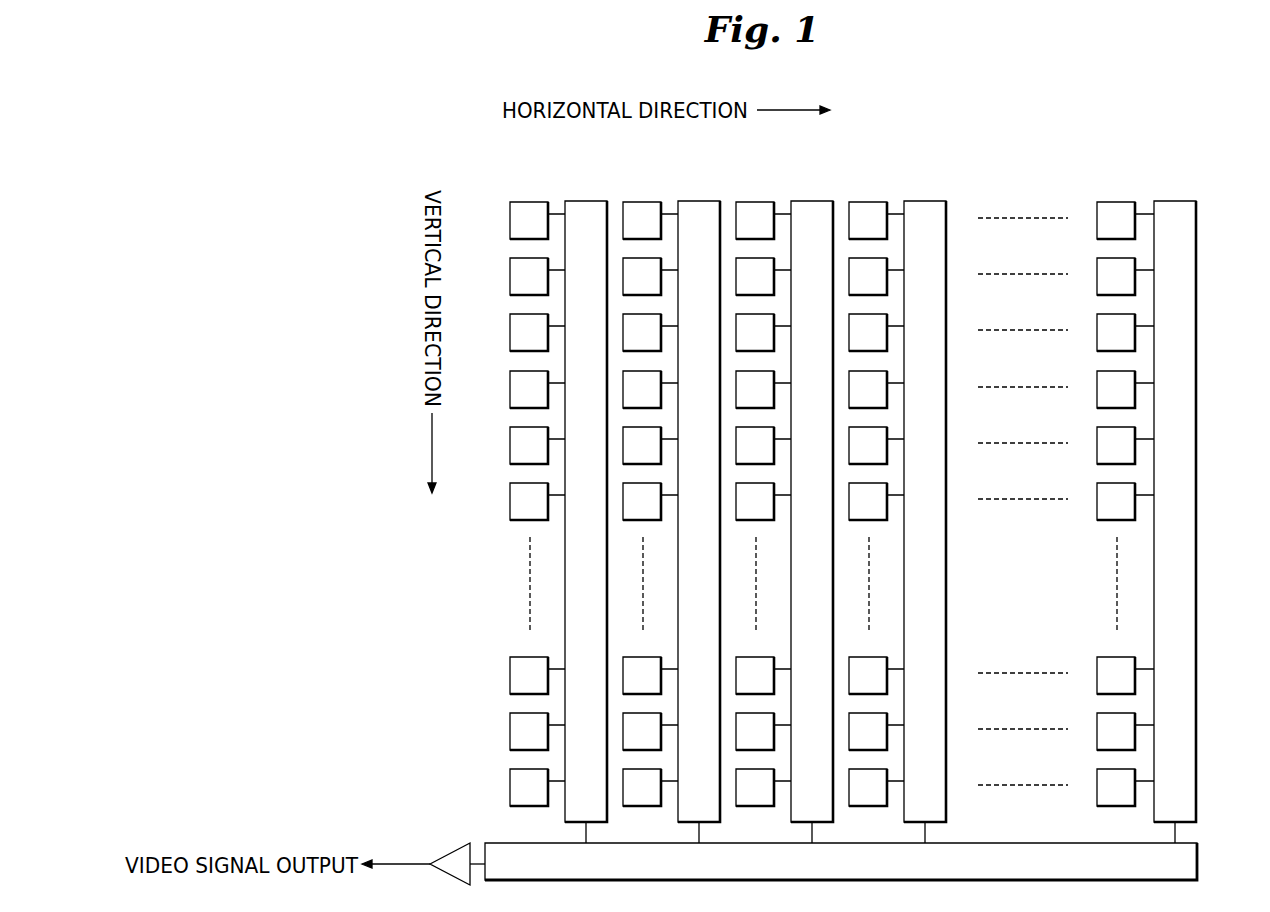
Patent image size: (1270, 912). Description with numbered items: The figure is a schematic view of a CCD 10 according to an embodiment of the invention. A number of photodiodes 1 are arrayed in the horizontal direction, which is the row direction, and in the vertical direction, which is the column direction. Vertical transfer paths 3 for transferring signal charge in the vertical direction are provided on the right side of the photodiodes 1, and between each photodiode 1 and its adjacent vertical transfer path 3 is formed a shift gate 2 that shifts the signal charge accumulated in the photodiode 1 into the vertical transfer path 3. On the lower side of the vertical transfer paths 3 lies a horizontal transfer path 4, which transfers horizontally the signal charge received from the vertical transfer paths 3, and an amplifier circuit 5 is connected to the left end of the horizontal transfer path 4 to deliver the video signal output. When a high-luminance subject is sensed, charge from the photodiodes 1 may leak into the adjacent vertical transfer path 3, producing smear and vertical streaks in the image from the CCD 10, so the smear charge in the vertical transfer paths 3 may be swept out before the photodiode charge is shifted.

The photodiode 1 is at (522, 332).
The shift gate 2 is at (1151, 782).
The vertical transfer path 3 is at (1180, 201).
The horizontal transfer path 4 is at (1063, 858).
The amplifier circuit 5 is at (448, 868).
The CCD 10 is at (1010, 125).